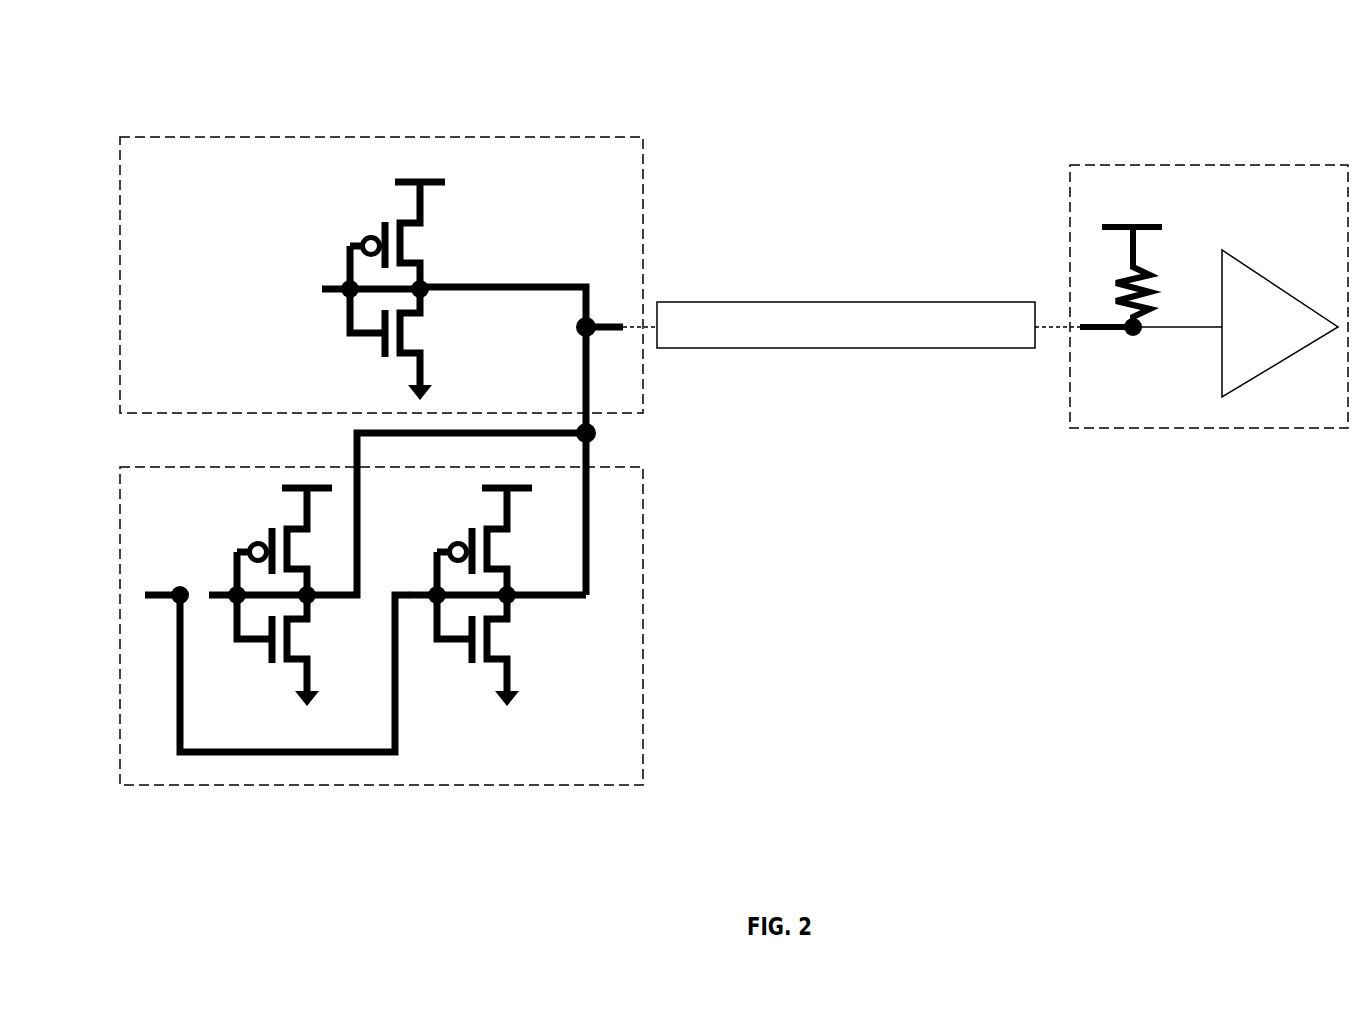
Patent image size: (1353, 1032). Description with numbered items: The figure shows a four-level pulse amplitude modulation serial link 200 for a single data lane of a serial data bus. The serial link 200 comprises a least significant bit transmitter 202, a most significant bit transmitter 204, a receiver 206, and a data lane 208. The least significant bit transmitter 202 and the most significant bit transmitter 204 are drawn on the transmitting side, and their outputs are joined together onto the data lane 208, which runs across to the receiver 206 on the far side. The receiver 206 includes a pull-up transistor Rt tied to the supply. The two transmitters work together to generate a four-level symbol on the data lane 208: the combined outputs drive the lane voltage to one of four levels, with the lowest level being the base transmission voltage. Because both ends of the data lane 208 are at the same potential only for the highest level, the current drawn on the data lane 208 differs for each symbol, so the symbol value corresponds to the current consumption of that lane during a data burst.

The PAM-4 serial link 200 is at (991, 76).
The least significant bit transmitter 202 is at (555, 121).
The most significant bit transmitter 204 is at (555, 827).
The receiver 206 is at (1268, 469).
The data lane 208 is at (908, 339).